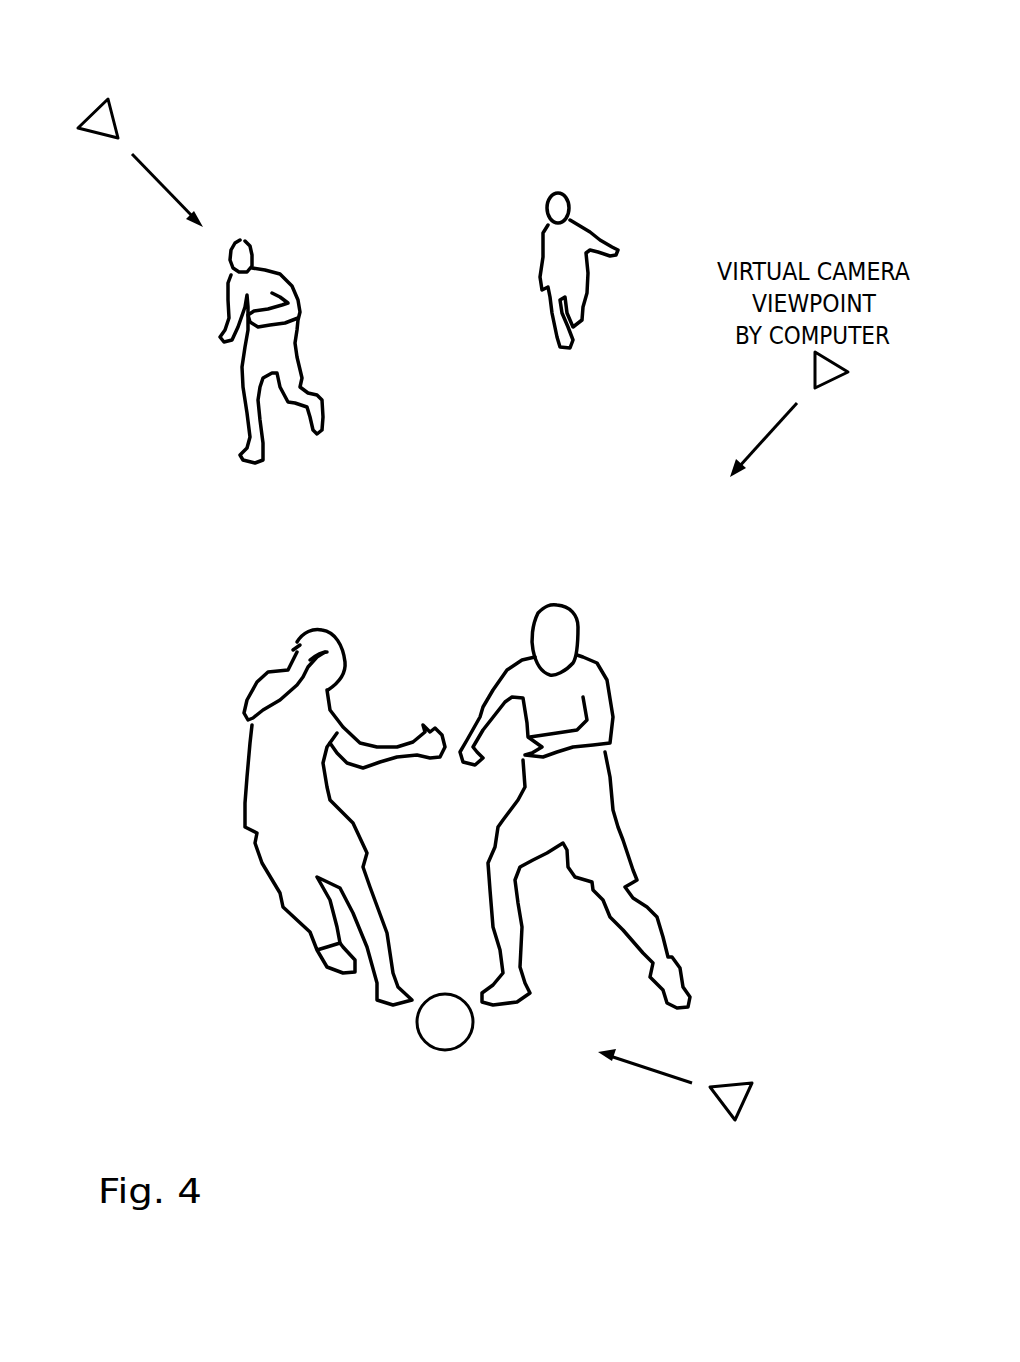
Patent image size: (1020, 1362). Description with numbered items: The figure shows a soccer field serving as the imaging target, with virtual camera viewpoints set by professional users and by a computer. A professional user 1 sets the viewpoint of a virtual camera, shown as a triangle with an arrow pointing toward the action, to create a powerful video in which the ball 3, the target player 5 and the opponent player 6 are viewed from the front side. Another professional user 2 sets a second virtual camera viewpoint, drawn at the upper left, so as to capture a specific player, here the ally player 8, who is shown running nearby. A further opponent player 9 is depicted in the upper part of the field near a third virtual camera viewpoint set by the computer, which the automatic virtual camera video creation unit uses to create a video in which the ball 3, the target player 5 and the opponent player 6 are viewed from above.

The professional user 1 is at (758, 1134).
The professional user 2 is at (167, 115).
The ball 3 is at (440, 1042).
The target player 5 is at (610, 785).
The opponent player 6 is at (247, 810).
The ally player 8 is at (240, 362).
The opponent player 9 is at (575, 232).